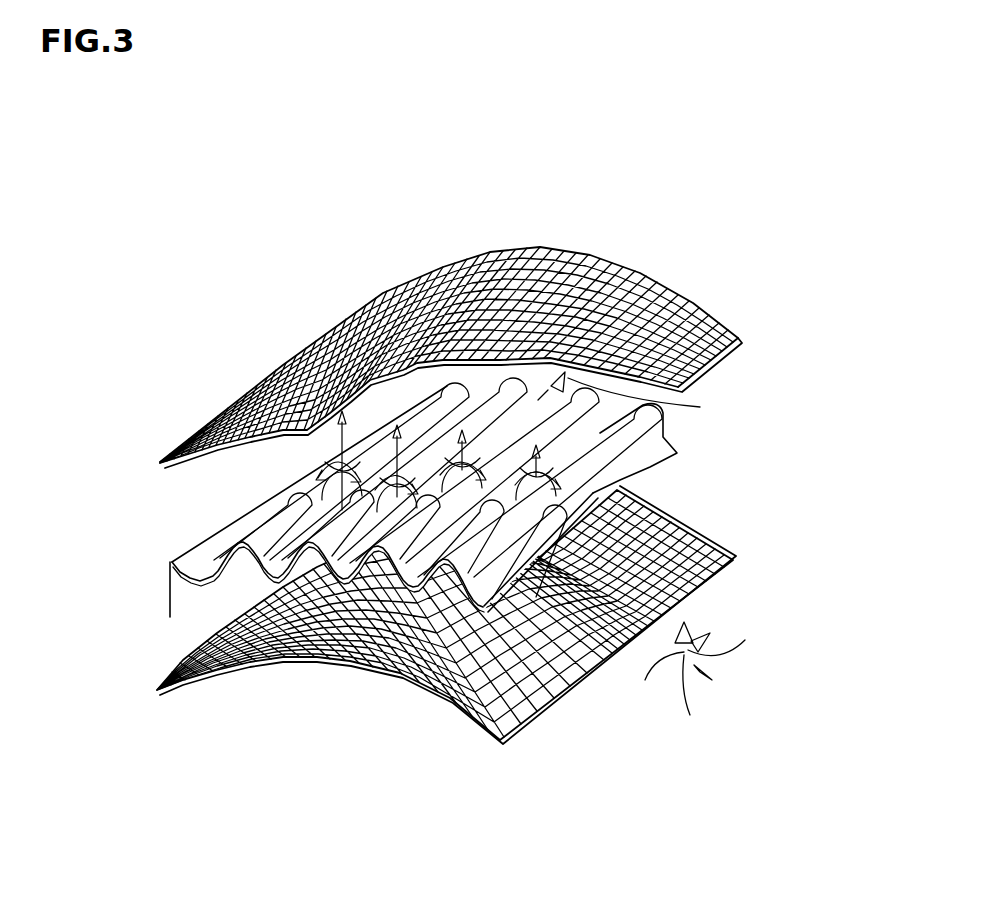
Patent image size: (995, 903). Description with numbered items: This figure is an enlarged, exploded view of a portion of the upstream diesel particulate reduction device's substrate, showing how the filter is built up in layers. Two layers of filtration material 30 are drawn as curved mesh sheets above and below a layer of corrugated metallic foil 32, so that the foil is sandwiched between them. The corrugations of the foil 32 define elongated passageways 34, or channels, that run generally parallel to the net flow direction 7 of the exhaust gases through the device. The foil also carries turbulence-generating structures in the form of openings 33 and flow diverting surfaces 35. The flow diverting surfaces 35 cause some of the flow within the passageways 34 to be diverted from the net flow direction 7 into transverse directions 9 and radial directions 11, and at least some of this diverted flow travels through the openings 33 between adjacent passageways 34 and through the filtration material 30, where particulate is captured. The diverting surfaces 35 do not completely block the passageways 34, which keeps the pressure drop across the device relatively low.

The filtration material 30 is at (724, 334).
The corrugated metallic foil 32 is at (395, 545).
The openings 33 is at (632, 472).
The elongated passageways 34 is at (227, 598).
The flow diverting surfaces 35 is at (397, 578).
The net flow direction 7 is at (650, 518).
The transverse directions 9 is at (697, 693).
The radial directions 11 is at (656, 671).